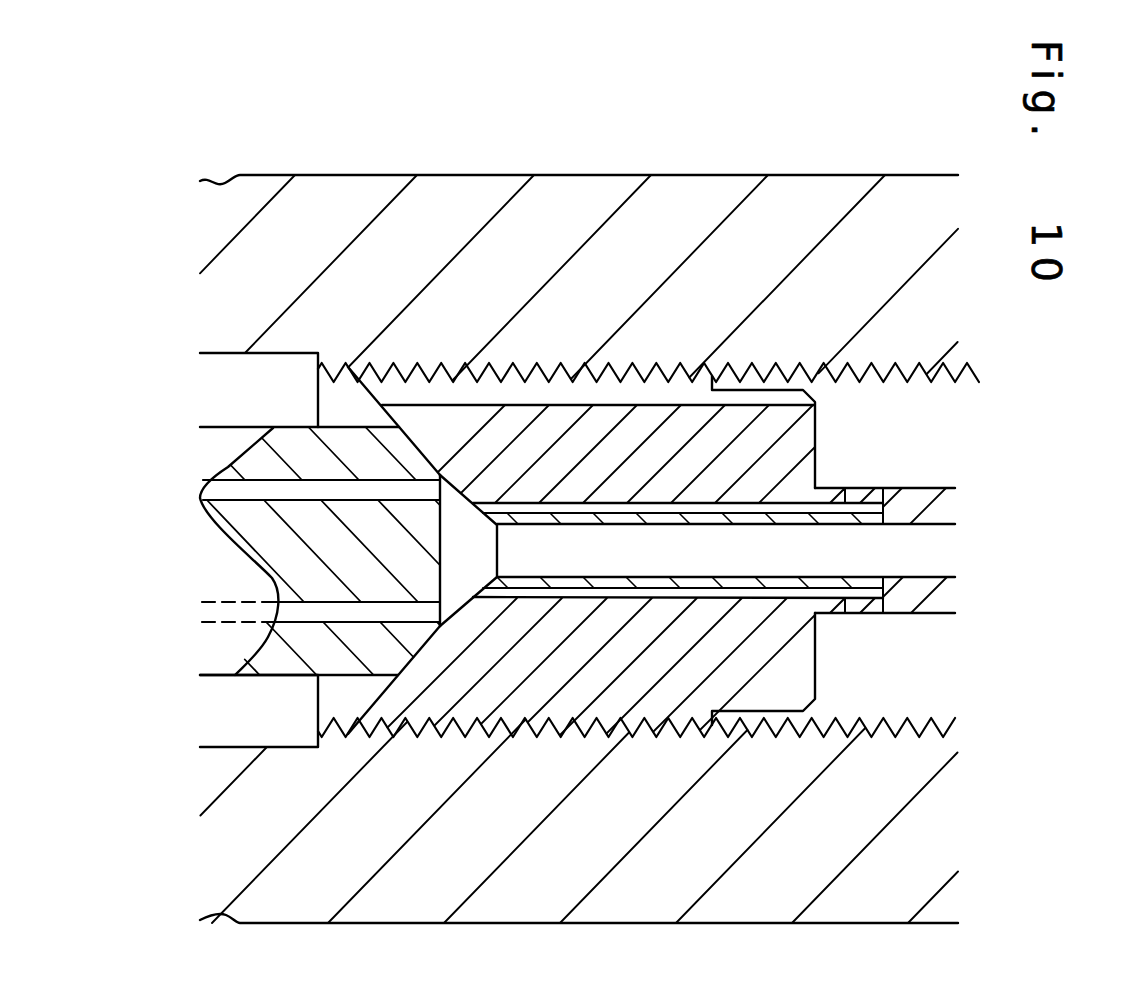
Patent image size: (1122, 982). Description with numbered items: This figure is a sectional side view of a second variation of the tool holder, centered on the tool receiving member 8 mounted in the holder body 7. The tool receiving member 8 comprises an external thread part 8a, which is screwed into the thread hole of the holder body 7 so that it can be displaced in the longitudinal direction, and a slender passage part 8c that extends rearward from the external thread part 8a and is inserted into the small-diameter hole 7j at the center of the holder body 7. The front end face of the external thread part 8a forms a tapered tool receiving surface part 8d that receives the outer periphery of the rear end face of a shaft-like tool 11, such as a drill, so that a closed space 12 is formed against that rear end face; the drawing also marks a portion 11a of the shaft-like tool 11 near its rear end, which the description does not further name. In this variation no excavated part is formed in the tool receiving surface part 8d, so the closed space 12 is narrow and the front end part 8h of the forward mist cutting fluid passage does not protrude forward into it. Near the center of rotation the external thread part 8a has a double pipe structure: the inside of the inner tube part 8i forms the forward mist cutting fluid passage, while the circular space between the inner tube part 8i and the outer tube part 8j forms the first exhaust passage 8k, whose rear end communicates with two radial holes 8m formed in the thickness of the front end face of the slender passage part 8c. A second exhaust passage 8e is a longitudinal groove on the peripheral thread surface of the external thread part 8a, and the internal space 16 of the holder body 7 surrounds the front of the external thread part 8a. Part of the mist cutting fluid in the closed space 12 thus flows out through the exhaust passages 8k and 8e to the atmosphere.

The holder body 7 is at (612, 913).
The small-diameter hole 7j is at (903, 373).
The tool receiving member 8 is at (532, 542).
The external thread part 8a is at (610, 665).
The slender passage part 8c is at (938, 616).
The tapered tool receiving surface part 8d is at (345, 500).
The second exhaust passage 8e is at (587, 390).
The front end part of the forward mist cutting fluid passage 8h is at (533, 540).
The inner tube part 8i is at (740, 582).
The outer tube part 8j is at (680, 610).
The first exhaust passage 8k is at (527, 592).
The radial holes 8m is at (862, 495).
The shaft-like tool 11 is at (276, 551).
The passage of shank member 11a is at (237, 490).
The closed space 12 is at (462, 515).
The internal space 16 is at (278, 377).